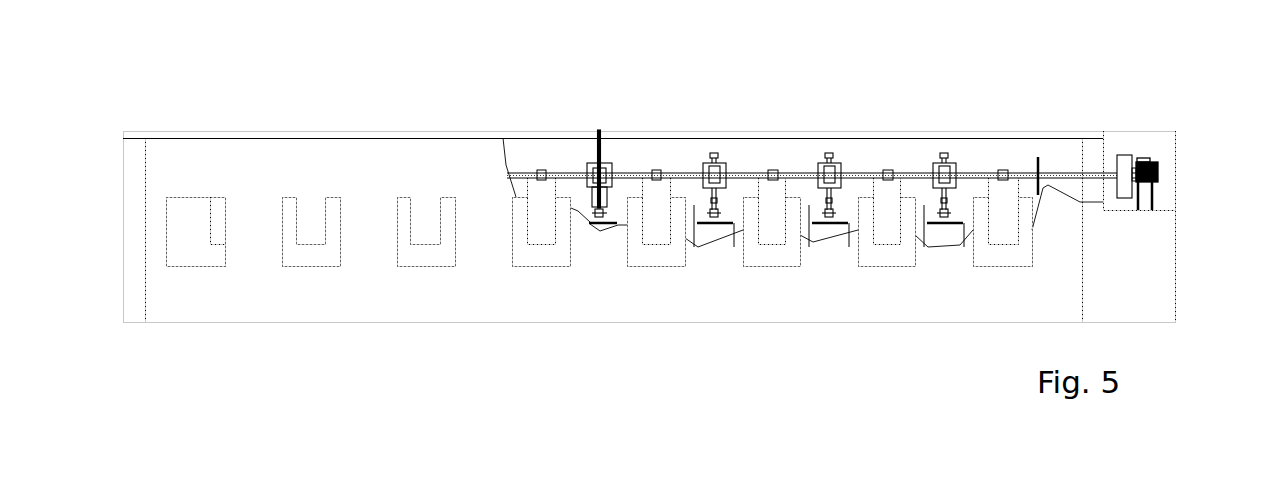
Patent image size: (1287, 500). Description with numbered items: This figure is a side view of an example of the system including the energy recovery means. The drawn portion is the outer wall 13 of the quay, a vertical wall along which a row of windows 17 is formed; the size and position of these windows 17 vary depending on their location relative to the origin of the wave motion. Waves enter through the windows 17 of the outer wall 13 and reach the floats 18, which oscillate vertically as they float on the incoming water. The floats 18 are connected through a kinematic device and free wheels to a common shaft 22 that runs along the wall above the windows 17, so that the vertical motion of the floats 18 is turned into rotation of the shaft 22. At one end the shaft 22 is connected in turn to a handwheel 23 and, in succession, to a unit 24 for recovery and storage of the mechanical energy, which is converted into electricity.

The outer wall 13 is at (357, 173).
The windows 17 is at (288, 218).
The floats 18 is at (727, 232).
The shaft 22 is at (683, 180).
The handwheel 23 is at (1125, 163).
The unit for recovery and storage of mechanical energy 24 is at (1148, 165).